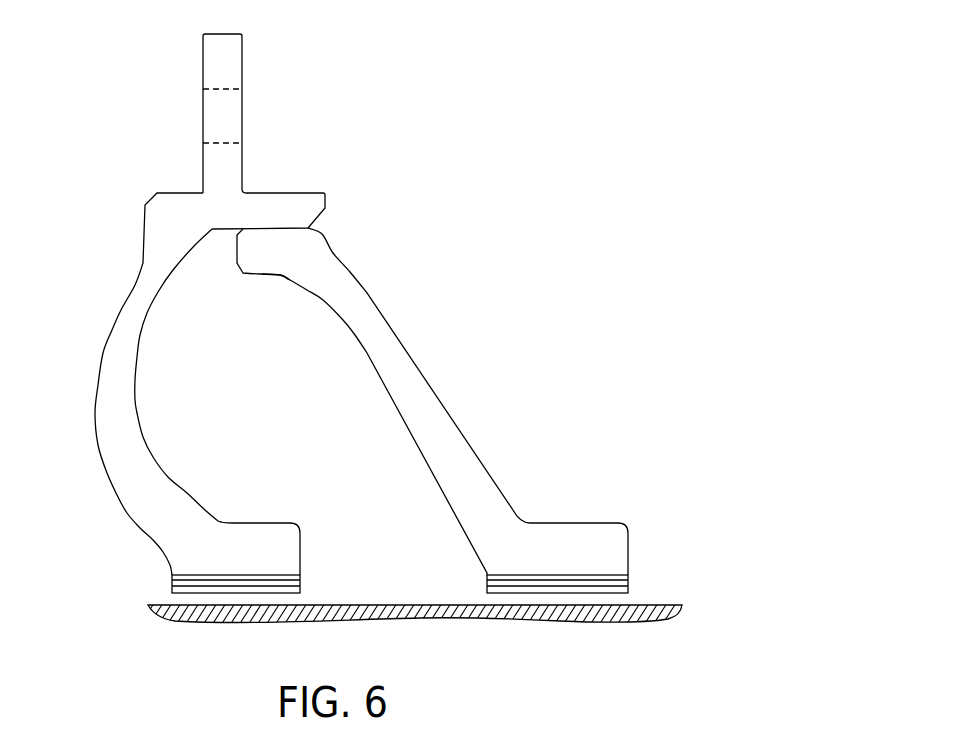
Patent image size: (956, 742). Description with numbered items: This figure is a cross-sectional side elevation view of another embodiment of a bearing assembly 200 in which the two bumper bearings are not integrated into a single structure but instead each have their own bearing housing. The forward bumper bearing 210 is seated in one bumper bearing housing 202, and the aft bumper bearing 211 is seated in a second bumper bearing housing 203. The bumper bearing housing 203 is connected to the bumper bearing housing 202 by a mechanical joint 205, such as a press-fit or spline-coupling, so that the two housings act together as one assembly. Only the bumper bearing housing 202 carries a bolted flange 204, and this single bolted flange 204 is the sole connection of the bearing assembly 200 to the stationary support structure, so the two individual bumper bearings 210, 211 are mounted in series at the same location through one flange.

The bearing assembly 200 is at (503, 188).
The bumper bearing housing 202 is at (102, 362).
The bumper bearing housing 203 is at (430, 377).
The bolted flange 204 is at (242, 63).
The mechanical joint 205 is at (267, 294).
The forward bumper bearing 210 is at (172, 588).
The aft bumper bearing 211 is at (628, 582).